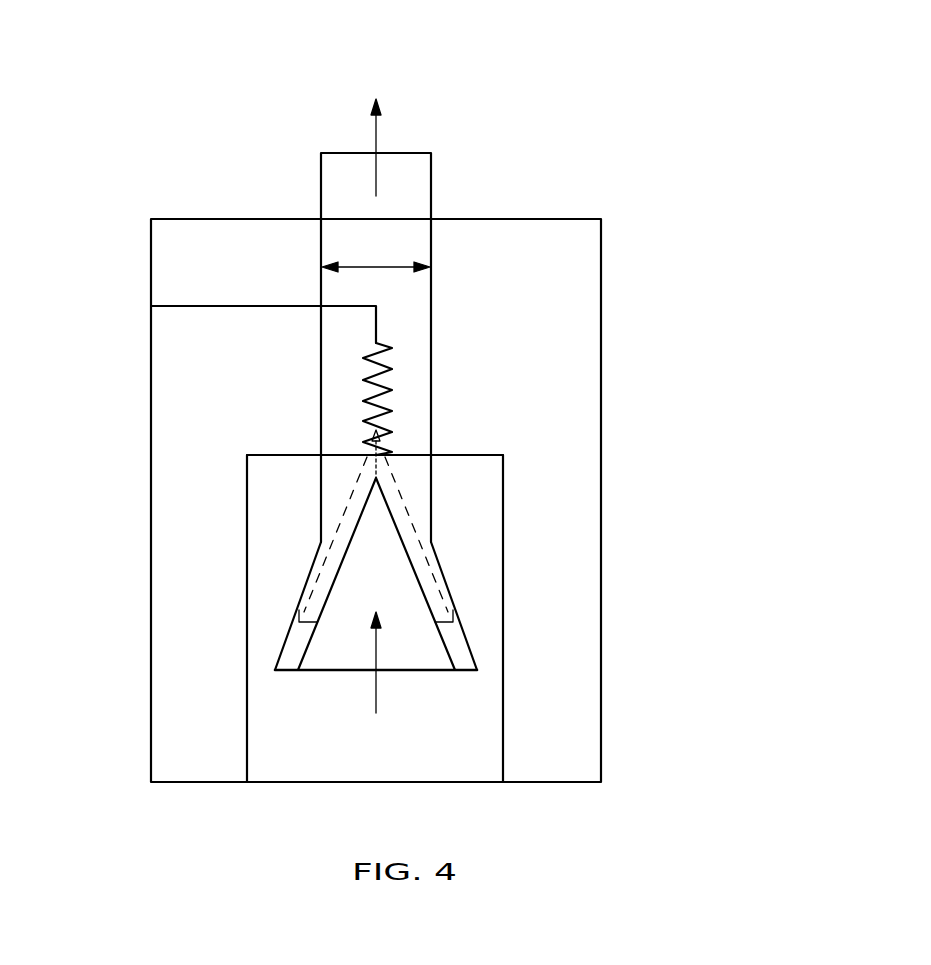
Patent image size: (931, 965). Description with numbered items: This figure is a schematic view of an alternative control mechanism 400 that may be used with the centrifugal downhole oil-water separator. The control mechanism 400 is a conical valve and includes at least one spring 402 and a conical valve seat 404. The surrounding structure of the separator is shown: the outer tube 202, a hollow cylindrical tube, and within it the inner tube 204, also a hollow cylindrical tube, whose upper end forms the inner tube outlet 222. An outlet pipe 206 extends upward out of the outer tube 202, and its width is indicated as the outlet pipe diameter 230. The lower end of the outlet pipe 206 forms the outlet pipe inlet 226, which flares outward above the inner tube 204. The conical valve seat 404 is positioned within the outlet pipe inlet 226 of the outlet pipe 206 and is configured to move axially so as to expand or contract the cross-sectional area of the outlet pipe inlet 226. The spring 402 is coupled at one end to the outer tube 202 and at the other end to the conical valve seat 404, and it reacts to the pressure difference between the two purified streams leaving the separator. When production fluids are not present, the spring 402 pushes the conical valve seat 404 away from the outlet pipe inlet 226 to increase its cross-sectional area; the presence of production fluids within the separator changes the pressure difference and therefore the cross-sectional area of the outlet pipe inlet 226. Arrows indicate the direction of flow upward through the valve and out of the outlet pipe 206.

The control mechanism 400 is at (653, 81).
The outer tube 202 is at (151, 259).
The outlet pipe 206 is at (321, 176).
The outlet pipe diameter 230 is at (376, 266).
The spring 402 is at (385, 407).
The inner tube 204 is at (247, 658).
The inner tube outlet 222 is at (265, 455).
The outlet pipe inlet 226 is at (467, 667).
The conical valve seat 404 is at (327, 600).